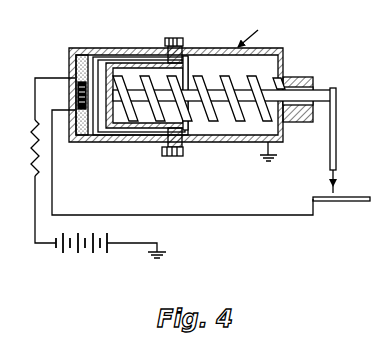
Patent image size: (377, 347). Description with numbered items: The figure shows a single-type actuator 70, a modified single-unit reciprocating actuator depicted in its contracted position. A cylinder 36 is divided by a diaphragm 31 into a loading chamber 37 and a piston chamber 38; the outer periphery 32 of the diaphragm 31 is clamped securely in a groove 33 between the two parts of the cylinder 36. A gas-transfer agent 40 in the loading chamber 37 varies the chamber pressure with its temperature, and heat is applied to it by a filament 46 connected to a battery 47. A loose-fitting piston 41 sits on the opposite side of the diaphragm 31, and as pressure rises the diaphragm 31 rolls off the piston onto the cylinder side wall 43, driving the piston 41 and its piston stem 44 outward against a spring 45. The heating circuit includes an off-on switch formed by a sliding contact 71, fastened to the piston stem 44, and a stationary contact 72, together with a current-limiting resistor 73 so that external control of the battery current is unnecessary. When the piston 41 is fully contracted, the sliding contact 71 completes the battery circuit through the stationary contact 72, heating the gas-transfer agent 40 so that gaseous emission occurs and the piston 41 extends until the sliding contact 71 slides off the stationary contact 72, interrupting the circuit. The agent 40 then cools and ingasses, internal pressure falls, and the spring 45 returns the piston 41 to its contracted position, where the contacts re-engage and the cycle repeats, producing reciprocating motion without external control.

The diaphragm 31 is at (110, 64).
The outer periphery 32 is at (184, 46).
The groove 33 is at (173, 157).
The cylinder 36 is at (225, 143).
The loading chamber 37 is at (103, 60).
The piston chamber 38 is at (283, 63).
The gas-transfer agent 40 is at (73, 70).
The piston 41 is at (128, 63).
The cylinder side wall 43 is at (210, 126).
The piston stem 44 is at (326, 91).
The spring 45 is at (203, 70).
The filament 46 is at (73, 97).
The battery 47 is at (86, 253).
The single-type actuator 70 is at (257, 33).
The sliding contact 71 is at (328, 188).
The stationary contact 72 is at (325, 202).
The current-limiting resistor 73 is at (42, 152).